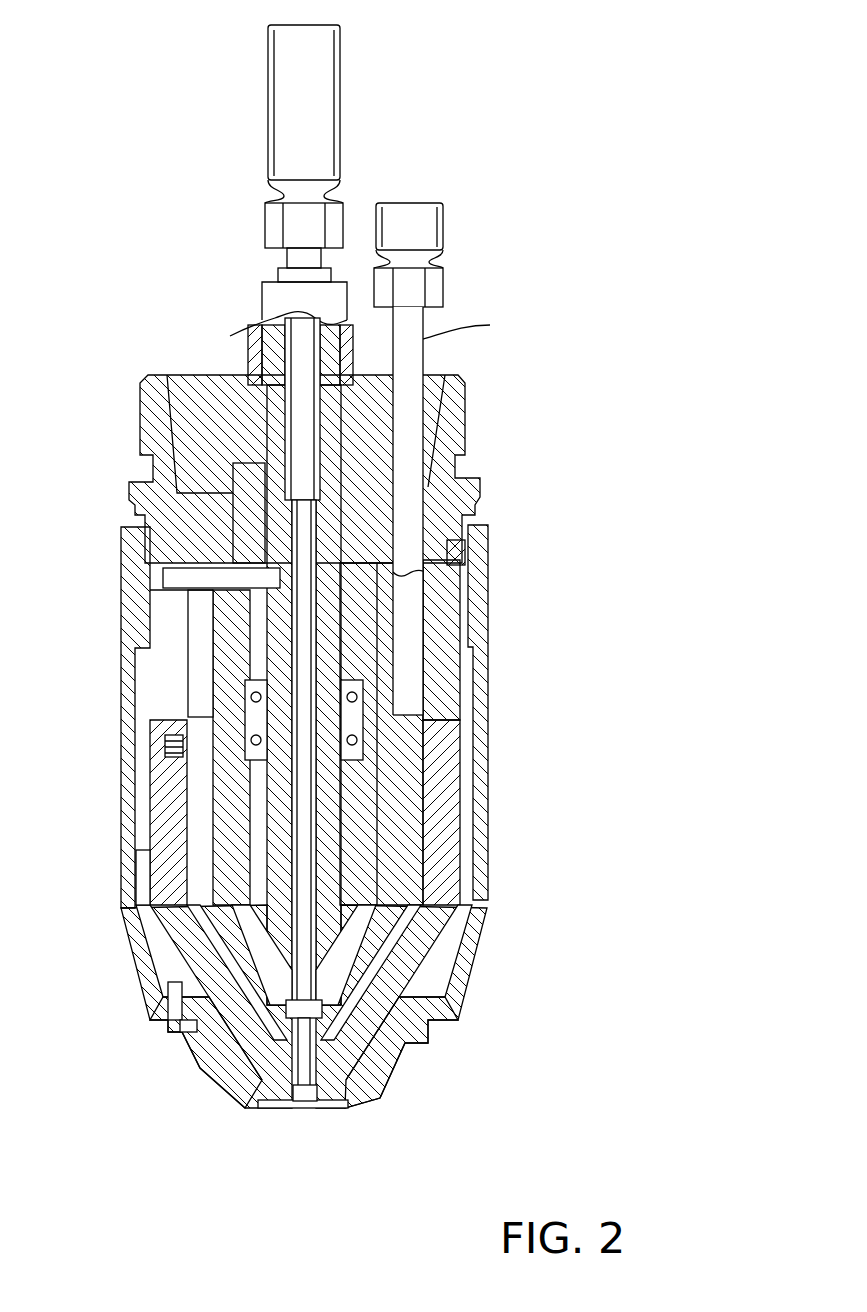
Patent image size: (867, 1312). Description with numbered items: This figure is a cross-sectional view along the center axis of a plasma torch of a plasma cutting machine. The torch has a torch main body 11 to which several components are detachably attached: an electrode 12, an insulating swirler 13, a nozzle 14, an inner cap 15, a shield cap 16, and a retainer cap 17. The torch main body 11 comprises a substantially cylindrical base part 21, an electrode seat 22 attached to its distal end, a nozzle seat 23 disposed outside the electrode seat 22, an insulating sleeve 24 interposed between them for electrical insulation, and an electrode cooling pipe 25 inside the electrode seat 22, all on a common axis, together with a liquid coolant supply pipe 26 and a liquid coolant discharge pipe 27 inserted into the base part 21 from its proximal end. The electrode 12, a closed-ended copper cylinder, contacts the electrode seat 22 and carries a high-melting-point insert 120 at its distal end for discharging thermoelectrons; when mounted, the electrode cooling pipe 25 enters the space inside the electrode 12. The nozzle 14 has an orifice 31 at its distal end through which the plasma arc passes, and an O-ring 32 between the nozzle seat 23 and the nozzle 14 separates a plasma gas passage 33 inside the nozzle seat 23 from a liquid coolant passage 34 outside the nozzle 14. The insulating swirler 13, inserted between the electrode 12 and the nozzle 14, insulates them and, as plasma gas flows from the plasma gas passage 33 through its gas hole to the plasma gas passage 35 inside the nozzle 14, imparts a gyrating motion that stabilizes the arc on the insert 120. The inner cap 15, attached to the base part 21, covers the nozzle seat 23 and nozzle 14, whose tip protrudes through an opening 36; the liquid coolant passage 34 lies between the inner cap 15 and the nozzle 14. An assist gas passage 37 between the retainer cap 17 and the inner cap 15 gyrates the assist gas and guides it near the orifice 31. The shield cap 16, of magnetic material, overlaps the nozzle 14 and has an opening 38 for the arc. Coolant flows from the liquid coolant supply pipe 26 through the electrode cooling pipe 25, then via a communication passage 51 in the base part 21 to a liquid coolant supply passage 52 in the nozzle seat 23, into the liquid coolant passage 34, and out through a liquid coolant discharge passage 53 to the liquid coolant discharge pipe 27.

The torch main body 11 is at (112, 405).
The electrode 12 is at (392, 882).
The insulating swirler 13 is at (372, 920).
The nozzle 14 is at (205, 1068).
The inner cap 15 is at (147, 967).
The shield cap 16 is at (222, 1080).
The retainer cap 17 is at (122, 800).
The base part 21 is at (185, 515).
The electrode seat 22 is at (243, 831).
The nozzle seat 23 is at (205, 918).
The insulating sleeve 24 is at (175, 745).
The electrode cooling pipe 25 is at (325, 773).
The liquid coolant supply pipe 26 is at (300, 335).
The liquid coolant discharge pipe 27 is at (415, 342).
The orifice 31 is at (313, 1108).
The O-ring 32 is at (165, 990).
The plasma gas passage 33 is at (187, 950).
The liquid coolant passage 34 is at (163, 1022).
The plasma gas passage 35 is at (262, 1093).
The opening 36 is at (360, 1048).
The assist gas passage 37 is at (135, 870).
The opening 38 is at (296, 1108).
The communication passage 51 is at (122, 575).
The liquid coolant supply passage 52 is at (197, 672).
The liquid coolant discharge passage 53 is at (410, 838).
The insert 120 is at (345, 1105).